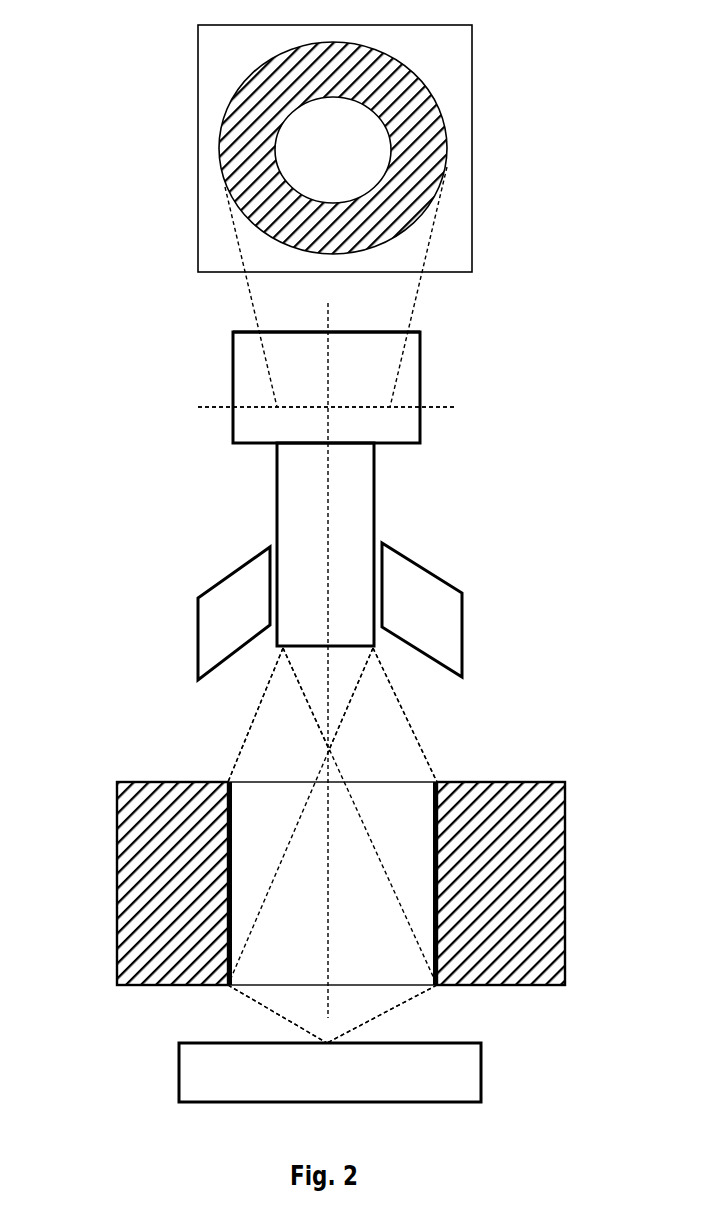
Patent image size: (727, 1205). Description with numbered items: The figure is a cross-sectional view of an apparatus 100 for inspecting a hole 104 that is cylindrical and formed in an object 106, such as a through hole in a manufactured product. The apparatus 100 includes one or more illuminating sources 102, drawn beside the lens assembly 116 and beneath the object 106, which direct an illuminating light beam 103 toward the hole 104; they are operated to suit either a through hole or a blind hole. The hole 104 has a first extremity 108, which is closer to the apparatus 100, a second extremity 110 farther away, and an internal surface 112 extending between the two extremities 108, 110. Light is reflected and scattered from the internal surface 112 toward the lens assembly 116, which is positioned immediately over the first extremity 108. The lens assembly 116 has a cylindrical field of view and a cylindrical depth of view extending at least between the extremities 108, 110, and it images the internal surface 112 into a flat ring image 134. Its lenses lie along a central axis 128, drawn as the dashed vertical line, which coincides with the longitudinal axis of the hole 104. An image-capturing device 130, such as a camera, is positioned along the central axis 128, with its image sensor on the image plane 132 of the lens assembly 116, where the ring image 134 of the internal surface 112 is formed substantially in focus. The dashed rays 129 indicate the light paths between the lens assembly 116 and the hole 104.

The apparatus 100 is at (522, 254).
The illuminating source 102 is at (198, 598).
The illuminating light beam 103 is at (267, 1008).
The hole 104 is at (277, 758).
The object 106 is at (565, 782).
The first extremity 108 is at (403, 768).
The second extremity 110 is at (400, 993).
The internal surface 112 is at (225, 905).
The lens assembly 116 is at (374, 535).
The central axis 128 is at (328, 312).
The diverging light beams 129 is at (353, 702).
The image-capturing device 130 is at (420, 387).
The image plane 132 is at (220, 410).
The flat ring image 134 is at (445, 125).